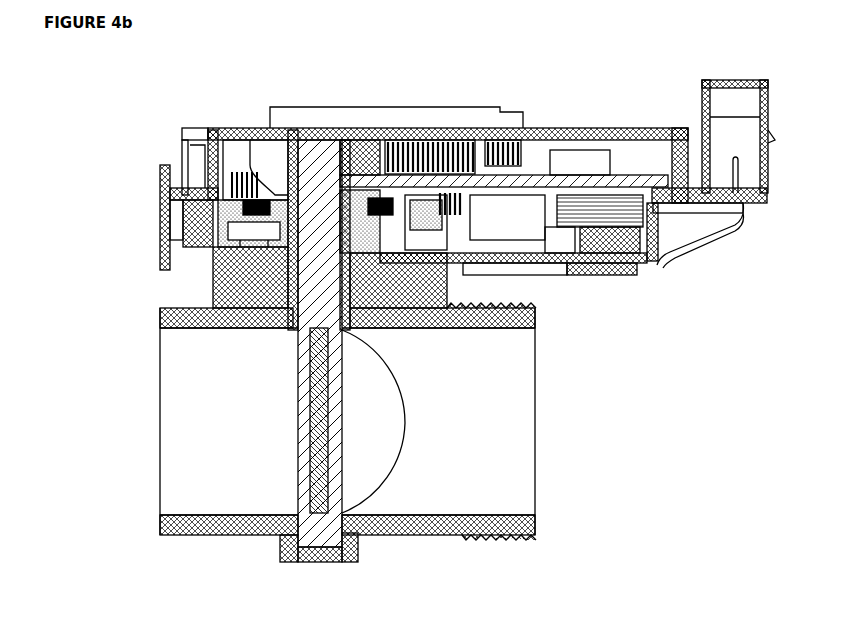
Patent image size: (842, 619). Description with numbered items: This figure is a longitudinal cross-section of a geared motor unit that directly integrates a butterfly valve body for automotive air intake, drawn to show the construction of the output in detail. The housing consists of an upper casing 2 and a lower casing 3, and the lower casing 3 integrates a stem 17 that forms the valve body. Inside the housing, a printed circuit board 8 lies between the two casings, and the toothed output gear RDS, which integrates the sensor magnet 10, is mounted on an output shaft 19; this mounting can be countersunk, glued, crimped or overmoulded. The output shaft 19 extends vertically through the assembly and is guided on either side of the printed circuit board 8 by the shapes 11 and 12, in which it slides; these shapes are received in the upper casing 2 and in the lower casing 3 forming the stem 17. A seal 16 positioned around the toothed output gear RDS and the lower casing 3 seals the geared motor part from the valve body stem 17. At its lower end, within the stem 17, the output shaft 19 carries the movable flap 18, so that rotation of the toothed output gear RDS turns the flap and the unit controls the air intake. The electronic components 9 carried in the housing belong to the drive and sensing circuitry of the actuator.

The upper casing 2 is at (548, 130).
The lower casing 3 is at (215, 297).
The printed circuit board 8 is at (647, 175).
The circuit board 9 is at (385, 195).
The sensor magnet 10 is at (205, 190).
The shape 11 is at (287, 168).
The shape 12 is at (290, 538).
The seal 16 is at (250, 232).
The stem 17 is at (197, 390).
The movable flap 18 is at (318, 412).
The output shaft 19 is at (318, 162).
The toothed output gear RDS is at (242, 212).